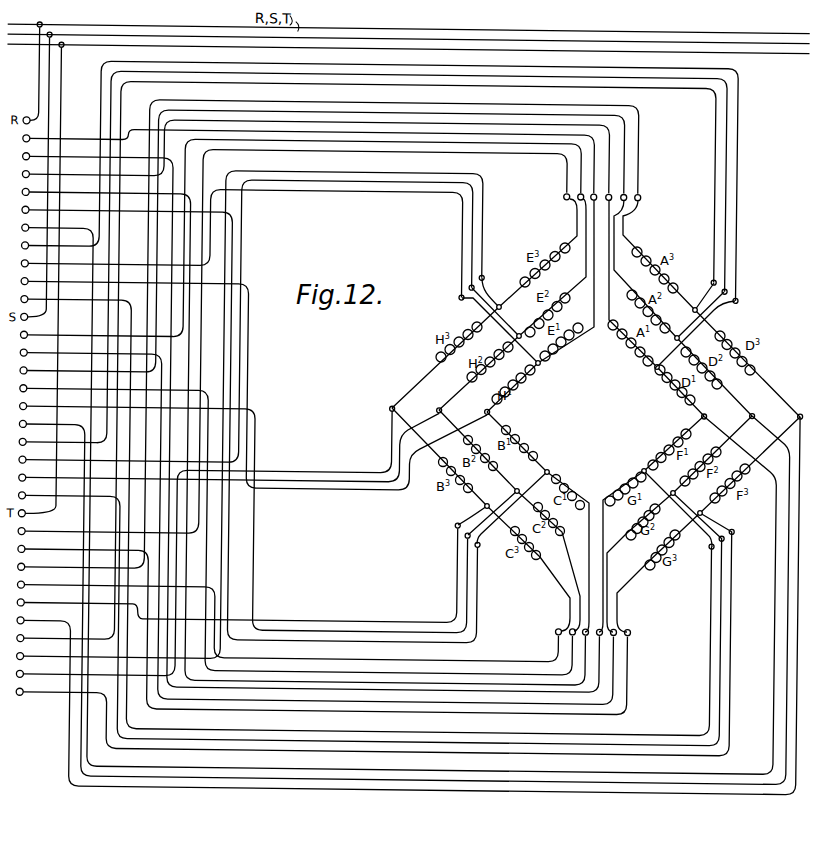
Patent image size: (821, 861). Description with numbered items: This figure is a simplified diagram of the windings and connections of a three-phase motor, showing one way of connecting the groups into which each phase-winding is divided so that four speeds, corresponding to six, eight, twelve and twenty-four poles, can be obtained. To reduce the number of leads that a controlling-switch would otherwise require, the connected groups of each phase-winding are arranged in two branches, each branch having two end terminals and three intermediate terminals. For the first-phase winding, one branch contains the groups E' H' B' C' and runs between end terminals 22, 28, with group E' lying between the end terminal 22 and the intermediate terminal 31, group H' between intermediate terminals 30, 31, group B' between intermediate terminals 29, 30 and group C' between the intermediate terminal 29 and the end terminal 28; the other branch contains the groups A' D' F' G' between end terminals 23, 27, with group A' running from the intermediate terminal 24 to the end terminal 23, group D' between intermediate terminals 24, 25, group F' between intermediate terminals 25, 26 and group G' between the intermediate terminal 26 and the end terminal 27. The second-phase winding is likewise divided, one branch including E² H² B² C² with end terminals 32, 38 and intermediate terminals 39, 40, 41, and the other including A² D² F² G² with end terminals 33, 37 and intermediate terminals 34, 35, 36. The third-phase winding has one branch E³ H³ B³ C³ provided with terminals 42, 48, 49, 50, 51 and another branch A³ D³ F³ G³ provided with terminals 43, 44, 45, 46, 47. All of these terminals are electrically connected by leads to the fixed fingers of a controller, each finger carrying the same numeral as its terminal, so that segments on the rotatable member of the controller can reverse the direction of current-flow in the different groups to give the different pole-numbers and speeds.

The end terminal 22 is at (303, 164).
The end terminal 23 is at (310, 159).
The intermediate terminal 24 is at (380, 184).
The intermediate terminal 25 is at (389, 497).
The intermediate terminal 26 is at (358, 514).
The end terminal 27 is at (305, 421).
The end terminal 28 is at (298, 435).
The intermediate terminal 29 is at (248, 423).
The intermediate terminal 30 is at (256, 383).
The intermediate terminal 31 is at (234, 246).
The end terminal 32 is at (295, 242).
The end terminal 33 is at (316, 246).
The intermediate terminal 34 is at (373, 263).
The intermediate terminal 35 is at (395, 593).
The intermediate terminal 36 is at (365, 617).
The end terminal 37 is at (311, 525).
The end terminal 38 is at (290, 528).
The intermediate terminal 39 is at (235, 516).
The intermediate terminal 40 is at (232, 445).
The intermediate terminal 41 is at (238, 324).
The terminal 42 is at (287, 346).
The terminal 43 is at (322, 339).
The terminal 44 is at (359, 367).
The terminal 45 is at (401, 598).
The terminal 46 is at (375, 637).
The terminal 47 is at (317, 629).
The terminal 48 is at (282, 620).
The terminal 49 is at (231, 570).
The terminal 50 is at (207, 543).
The terminal 51 is at (249, 418).